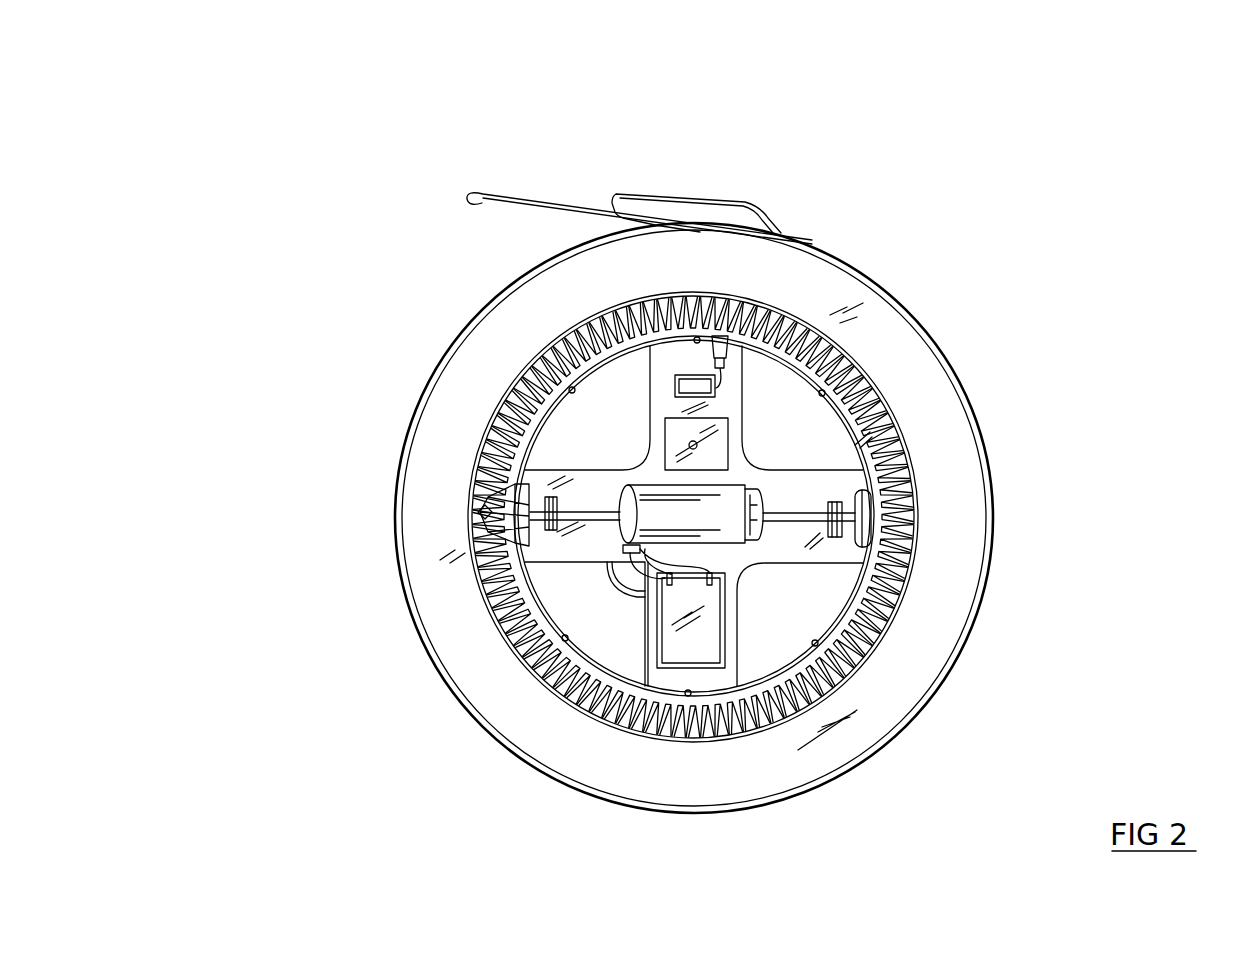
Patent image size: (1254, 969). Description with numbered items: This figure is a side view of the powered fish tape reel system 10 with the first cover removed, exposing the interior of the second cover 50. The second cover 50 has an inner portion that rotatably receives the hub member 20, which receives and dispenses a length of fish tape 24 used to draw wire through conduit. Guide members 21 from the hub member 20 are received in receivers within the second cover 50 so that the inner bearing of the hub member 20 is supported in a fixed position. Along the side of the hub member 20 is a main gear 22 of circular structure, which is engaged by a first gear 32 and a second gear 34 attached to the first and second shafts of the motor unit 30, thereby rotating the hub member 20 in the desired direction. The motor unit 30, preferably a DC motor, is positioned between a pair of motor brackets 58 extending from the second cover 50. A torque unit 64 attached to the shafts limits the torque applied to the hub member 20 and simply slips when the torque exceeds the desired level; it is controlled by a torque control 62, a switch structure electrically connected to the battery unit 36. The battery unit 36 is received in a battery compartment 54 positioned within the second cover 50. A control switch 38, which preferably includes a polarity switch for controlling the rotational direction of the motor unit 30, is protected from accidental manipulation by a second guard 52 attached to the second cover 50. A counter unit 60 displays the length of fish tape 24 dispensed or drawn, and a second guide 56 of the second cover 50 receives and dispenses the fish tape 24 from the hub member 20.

The powered fish tape reel system 10 is at (1152, 136).
The hub member 20 is at (966, 378).
The guide members 21 is at (577, 393).
The main gear 22 is at (897, 533).
The fish tape 24 is at (502, 195).
The motor unit 30 is at (768, 535).
The first gear 32 is at (480, 518).
The second gear 34 is at (880, 497).
The battery unit 36 is at (700, 653).
The control switch 38 is at (640, 568).
The second cover 50 is at (868, 258).
The second guard 52 is at (622, 570).
The battery compartment 54 is at (670, 666).
The second guide 56 is at (650, 194).
The motor brackets 58 is at (645, 485).
The counter unit 60 is at (718, 390).
The torque control 62 is at (728, 431).
The torque unit 64 is at (768, 537).